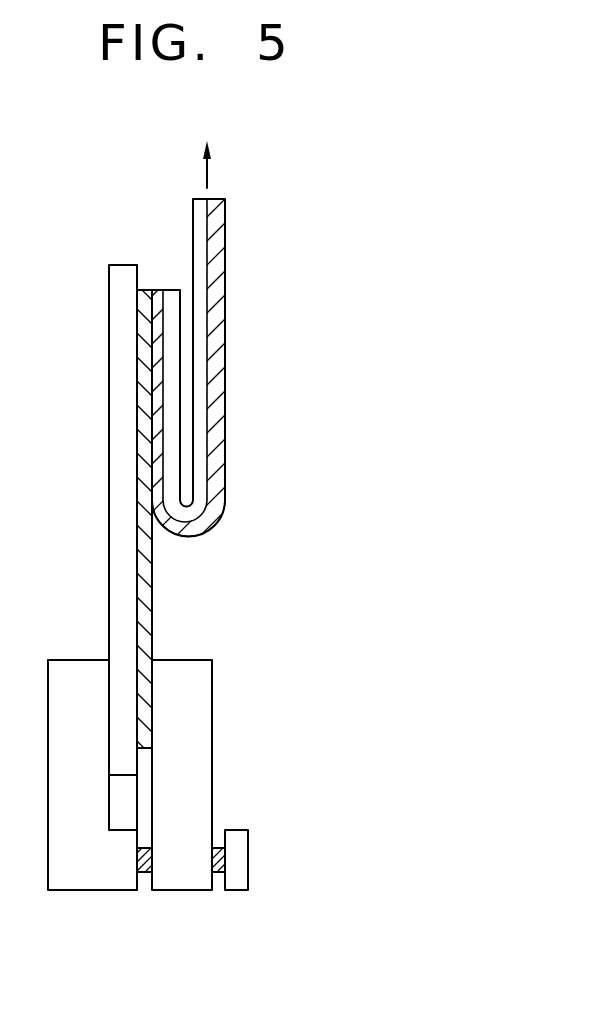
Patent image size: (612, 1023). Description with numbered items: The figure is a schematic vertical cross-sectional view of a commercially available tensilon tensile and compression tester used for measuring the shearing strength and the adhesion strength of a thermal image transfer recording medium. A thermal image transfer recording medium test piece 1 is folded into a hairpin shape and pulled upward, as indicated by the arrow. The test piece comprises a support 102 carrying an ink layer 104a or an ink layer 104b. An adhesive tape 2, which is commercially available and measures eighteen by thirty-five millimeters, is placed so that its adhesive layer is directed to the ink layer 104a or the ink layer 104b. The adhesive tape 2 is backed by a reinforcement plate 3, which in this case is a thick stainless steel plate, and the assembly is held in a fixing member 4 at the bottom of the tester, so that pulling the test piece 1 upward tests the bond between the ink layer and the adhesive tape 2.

The thermal image transfer recording medium test piece 1 is at (308, 370).
The adhesive tape 2 is at (148, 580).
The reinforcement plate 3 is at (108, 433).
The fixing member 4 is at (212, 738).
The support 102 is at (205, 413).
The ink layer 104a is at (216, 324).
The ink layer 104b is at (188, 368).